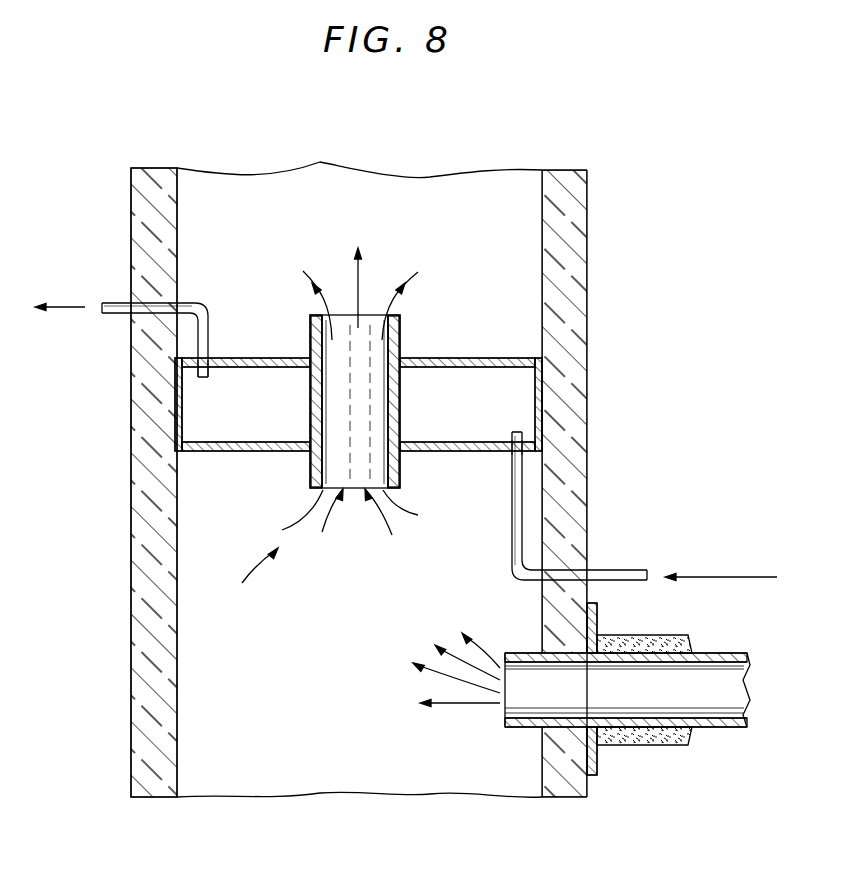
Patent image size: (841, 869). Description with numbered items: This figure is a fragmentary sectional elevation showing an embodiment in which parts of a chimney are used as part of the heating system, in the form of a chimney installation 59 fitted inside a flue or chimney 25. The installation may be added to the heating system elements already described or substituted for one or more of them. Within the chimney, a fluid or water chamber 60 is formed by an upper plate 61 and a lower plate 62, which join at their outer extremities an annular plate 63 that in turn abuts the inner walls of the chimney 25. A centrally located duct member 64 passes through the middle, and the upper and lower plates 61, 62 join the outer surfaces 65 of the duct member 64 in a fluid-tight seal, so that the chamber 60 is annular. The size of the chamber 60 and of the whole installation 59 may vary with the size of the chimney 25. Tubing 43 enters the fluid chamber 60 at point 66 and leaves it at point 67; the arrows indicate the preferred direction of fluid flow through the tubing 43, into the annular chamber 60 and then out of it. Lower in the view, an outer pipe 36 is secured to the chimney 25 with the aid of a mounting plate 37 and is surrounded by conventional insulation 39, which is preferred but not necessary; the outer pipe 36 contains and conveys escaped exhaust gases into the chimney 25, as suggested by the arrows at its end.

The flue or chimney 25 is at (574, 323).
The outer pipe 36 is at (518, 729).
The mounting plate 37 is at (598, 620).
The insulation 39 is at (678, 637).
The tubing 43 is at (118, 302).
The chimney installation 59 is at (243, 570).
The fluid or water chamber 60 is at (217, 438).
The upper plate 61 is at (286, 357).
The lower plate 62 is at (271, 452).
The annular plate 63 is at (175, 405).
The duct member 64 is at (406, 336).
The outer surfaces of duct member 65 is at (310, 394).
The entry point 66 is at (528, 438).
The exit point 67 is at (222, 356).